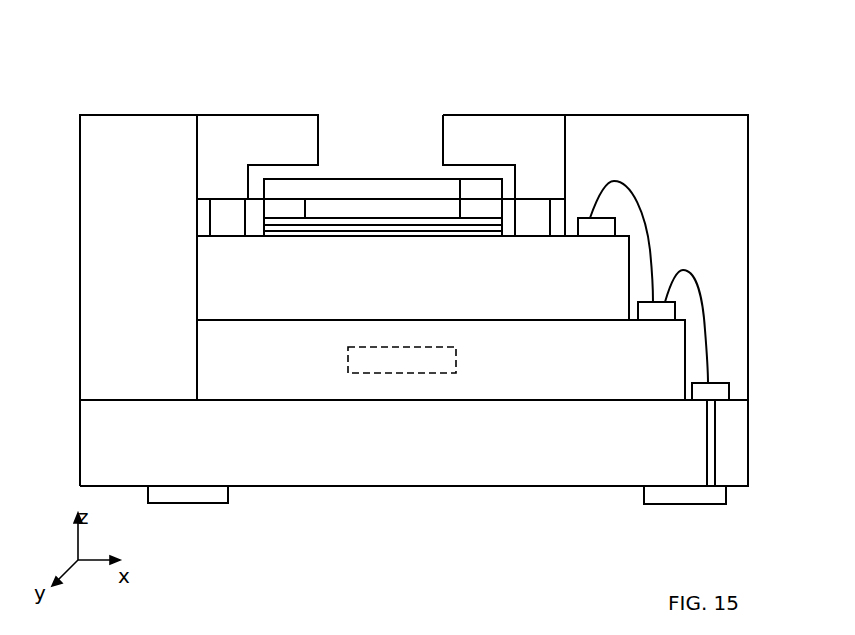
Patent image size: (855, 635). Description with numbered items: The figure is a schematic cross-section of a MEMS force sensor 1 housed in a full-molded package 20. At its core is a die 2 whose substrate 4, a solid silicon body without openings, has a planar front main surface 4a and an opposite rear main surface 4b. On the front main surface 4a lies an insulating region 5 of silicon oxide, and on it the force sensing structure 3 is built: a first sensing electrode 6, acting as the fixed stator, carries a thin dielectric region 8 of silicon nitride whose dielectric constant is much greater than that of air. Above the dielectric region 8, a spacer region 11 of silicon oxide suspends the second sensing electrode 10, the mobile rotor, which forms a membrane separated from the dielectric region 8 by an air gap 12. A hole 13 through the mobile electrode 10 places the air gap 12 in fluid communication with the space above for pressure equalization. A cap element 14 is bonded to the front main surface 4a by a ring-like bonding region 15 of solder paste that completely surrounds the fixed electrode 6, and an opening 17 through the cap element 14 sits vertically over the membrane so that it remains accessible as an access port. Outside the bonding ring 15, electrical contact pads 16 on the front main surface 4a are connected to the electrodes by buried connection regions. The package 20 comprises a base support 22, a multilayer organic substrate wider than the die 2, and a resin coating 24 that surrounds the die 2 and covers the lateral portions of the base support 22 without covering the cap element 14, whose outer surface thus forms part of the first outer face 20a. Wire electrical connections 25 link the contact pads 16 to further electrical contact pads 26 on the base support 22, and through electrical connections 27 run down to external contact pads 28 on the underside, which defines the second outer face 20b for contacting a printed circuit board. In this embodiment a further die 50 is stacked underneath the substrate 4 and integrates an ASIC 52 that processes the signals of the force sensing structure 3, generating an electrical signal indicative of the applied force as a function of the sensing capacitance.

The MEMS force sensor 1 is at (738, 82).
The die 2 is at (633, 262).
The force sensing structure 3 is at (377, 255).
The substrate 4 is at (540, 305).
The front main surface 4a is at (561, 228).
The rear main surface 4b is at (480, 324).
The insulating region 5 is at (495, 232).
The first sensing electrode 6 is at (257, 235).
The dielectric region 8 is at (412, 234).
The second sensing electrode 10 is at (358, 184).
The spacer region 11 is at (225, 207).
The air gap 12 is at (390, 208).
The hole 13 is at (458, 178).
The cap element 14 is at (240, 122).
The bonding region 15 is at (222, 225).
The electrical contact pads 16 is at (589, 228).
The opening 17 is at (320, 128).
The package 20 is at (722, 270).
The first outer face 20a is at (646, 113).
The second outer face 20b is at (402, 500).
The base support 22 is at (98, 441).
The coating 24 is at (103, 153).
The wire electrical connections 25 is at (640, 192).
The further electrical contact pads 26 is at (667, 310).
The through electrical connections 27 is at (710, 440).
The external contact pads 28 is at (210, 495).
The further die 50 is at (597, 386).
The ASIC 52 is at (347, 355).